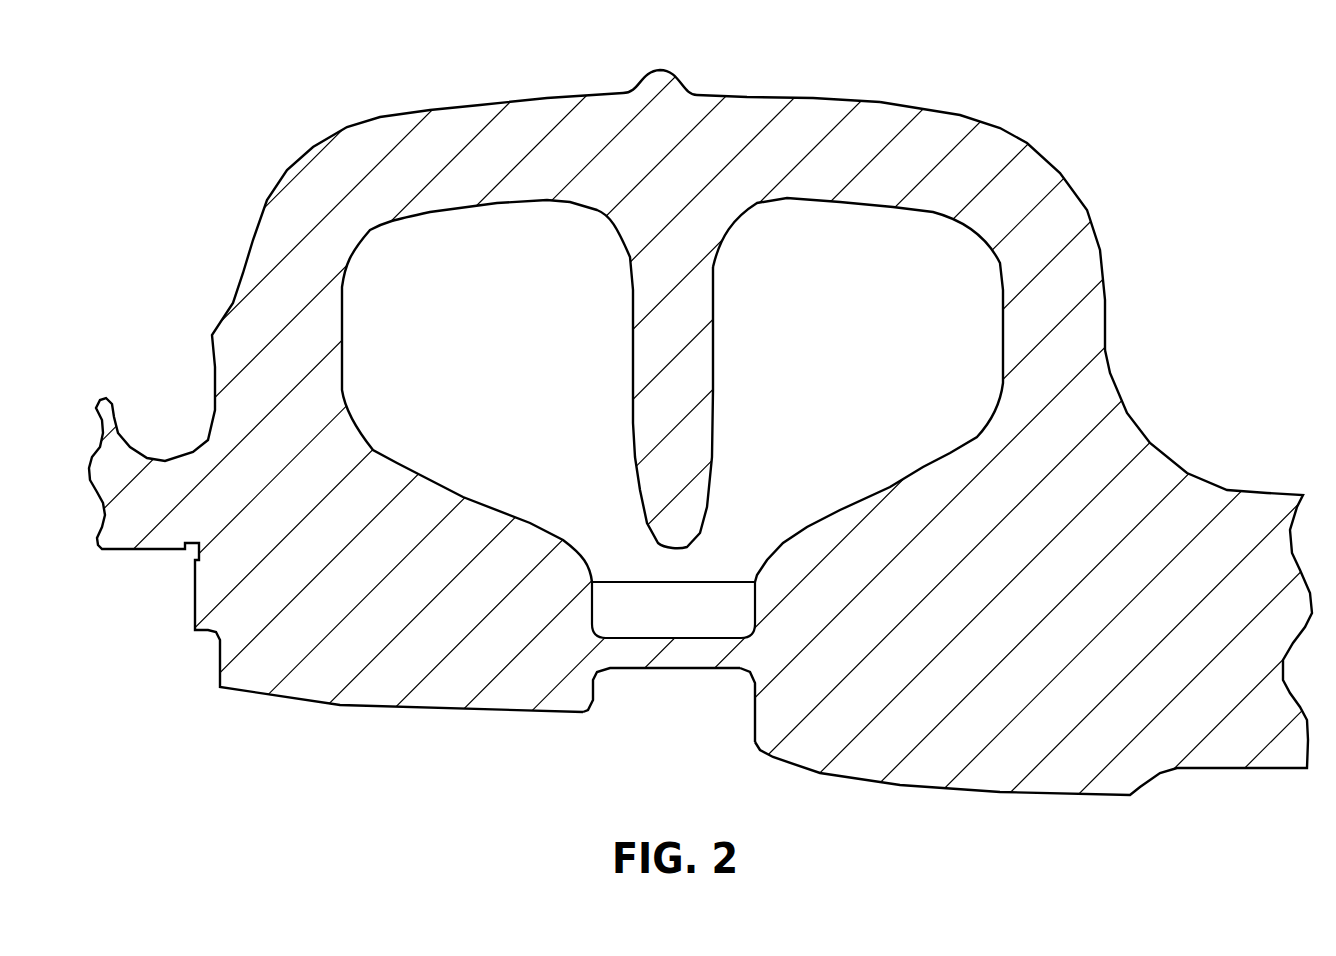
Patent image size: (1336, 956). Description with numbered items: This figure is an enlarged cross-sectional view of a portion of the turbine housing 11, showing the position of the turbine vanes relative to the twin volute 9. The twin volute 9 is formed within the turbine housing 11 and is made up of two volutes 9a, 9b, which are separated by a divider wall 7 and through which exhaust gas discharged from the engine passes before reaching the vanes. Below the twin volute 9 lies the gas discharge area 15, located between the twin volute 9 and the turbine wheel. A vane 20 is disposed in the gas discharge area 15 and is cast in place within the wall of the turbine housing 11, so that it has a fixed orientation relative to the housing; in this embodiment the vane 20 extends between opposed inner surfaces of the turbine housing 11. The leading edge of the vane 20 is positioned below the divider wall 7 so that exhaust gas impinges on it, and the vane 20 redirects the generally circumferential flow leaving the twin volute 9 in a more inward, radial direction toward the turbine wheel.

The twin volute 9 is at (778, 148).
The volute 9a is at (449, 327).
The volute 9b is at (812, 310).
The turbine housing 11 is at (1038, 190).
The divider wall 7 is at (695, 418).
The vane 20 is at (633, 653).
The gas discharge area 15 is at (720, 692).